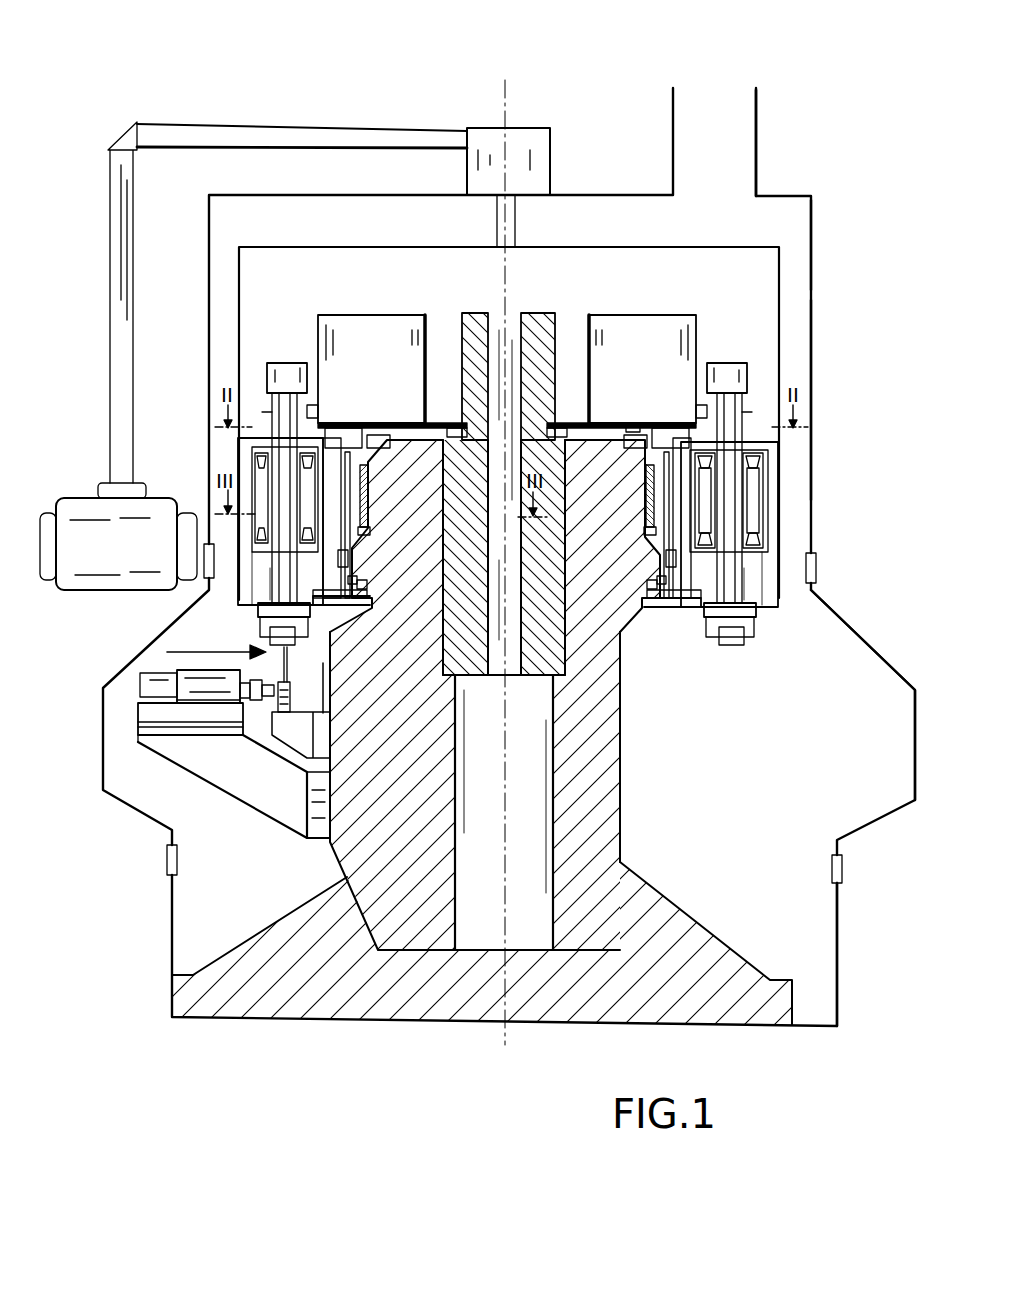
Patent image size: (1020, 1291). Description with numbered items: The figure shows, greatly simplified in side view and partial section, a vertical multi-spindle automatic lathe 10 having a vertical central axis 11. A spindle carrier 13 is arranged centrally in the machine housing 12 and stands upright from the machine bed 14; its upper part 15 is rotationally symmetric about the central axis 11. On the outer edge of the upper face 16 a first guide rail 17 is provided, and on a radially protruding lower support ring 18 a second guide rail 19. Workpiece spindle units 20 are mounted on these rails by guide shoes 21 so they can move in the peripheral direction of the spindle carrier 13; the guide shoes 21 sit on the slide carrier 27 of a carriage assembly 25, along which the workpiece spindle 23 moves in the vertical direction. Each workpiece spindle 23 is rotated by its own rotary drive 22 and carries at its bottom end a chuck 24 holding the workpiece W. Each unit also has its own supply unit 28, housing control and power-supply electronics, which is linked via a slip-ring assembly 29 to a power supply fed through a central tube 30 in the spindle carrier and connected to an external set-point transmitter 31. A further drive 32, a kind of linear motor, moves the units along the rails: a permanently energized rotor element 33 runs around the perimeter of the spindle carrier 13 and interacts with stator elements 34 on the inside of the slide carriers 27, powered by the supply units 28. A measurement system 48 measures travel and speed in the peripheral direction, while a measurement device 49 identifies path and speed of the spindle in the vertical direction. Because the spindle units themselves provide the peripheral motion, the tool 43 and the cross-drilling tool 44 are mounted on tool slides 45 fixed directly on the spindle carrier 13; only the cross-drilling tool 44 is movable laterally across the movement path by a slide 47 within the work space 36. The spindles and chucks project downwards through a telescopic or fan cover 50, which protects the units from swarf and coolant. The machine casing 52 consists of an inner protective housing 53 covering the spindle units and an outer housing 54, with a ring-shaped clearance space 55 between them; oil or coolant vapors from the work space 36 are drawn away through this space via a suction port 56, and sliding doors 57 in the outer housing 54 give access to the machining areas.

The multi-spindle automatic lathe 10 is at (786, 75).
The central axis 11 is at (503, 865).
The machine housing 12 is at (587, 194).
The spindle carrier 13 is at (596, 815).
The machine bed 14 is at (352, 1024).
The upper part 15 is at (624, 640).
The upper face 16 is at (636, 424).
The first guide rail 17 is at (348, 455).
The lower support ring 18 is at (350, 560).
The second guide rail 19 is at (367, 584).
The workpiece spindle unit 20 is at (275, 360).
The guide shoe 21 is at (378, 436).
The rotary drive 22 is at (255, 470).
The workpiece spindle 23 is at (270, 568).
The chuck 24 is at (258, 628).
The carriage assembly 25 is at (262, 555).
The slide carrier 27 is at (336, 445).
The supply unit 28 is at (388, 328).
The slip-ring assembly 29 is at (442, 422).
The central tube 30 is at (473, 315).
The external set-point transmitter 31 is at (96, 520).
The drive 32 is at (378, 494).
The rotor element 33 is at (370, 528).
The stator element 34 is at (362, 468).
The work space 36 is at (262, 673).
The tool 43 is at (290, 700).
The cross-drilling tool 44 is at (230, 723).
The tool slide 45 is at (215, 793).
The slide 47 is at (190, 692).
The measurement system 48 is at (367, 575).
The measurement device 49 is at (303, 360).
The telescopic or fan cover 50 is at (344, 640).
The casing 52 is at (838, 922).
The inner protective housing 53 is at (783, 350).
The outer housing 54 is at (811, 230).
The clearance space 55 is at (795, 298).
The suction port 56 is at (728, 152).
The sliding doors 57 is at (870, 650).
The workpiece W is at (297, 678).